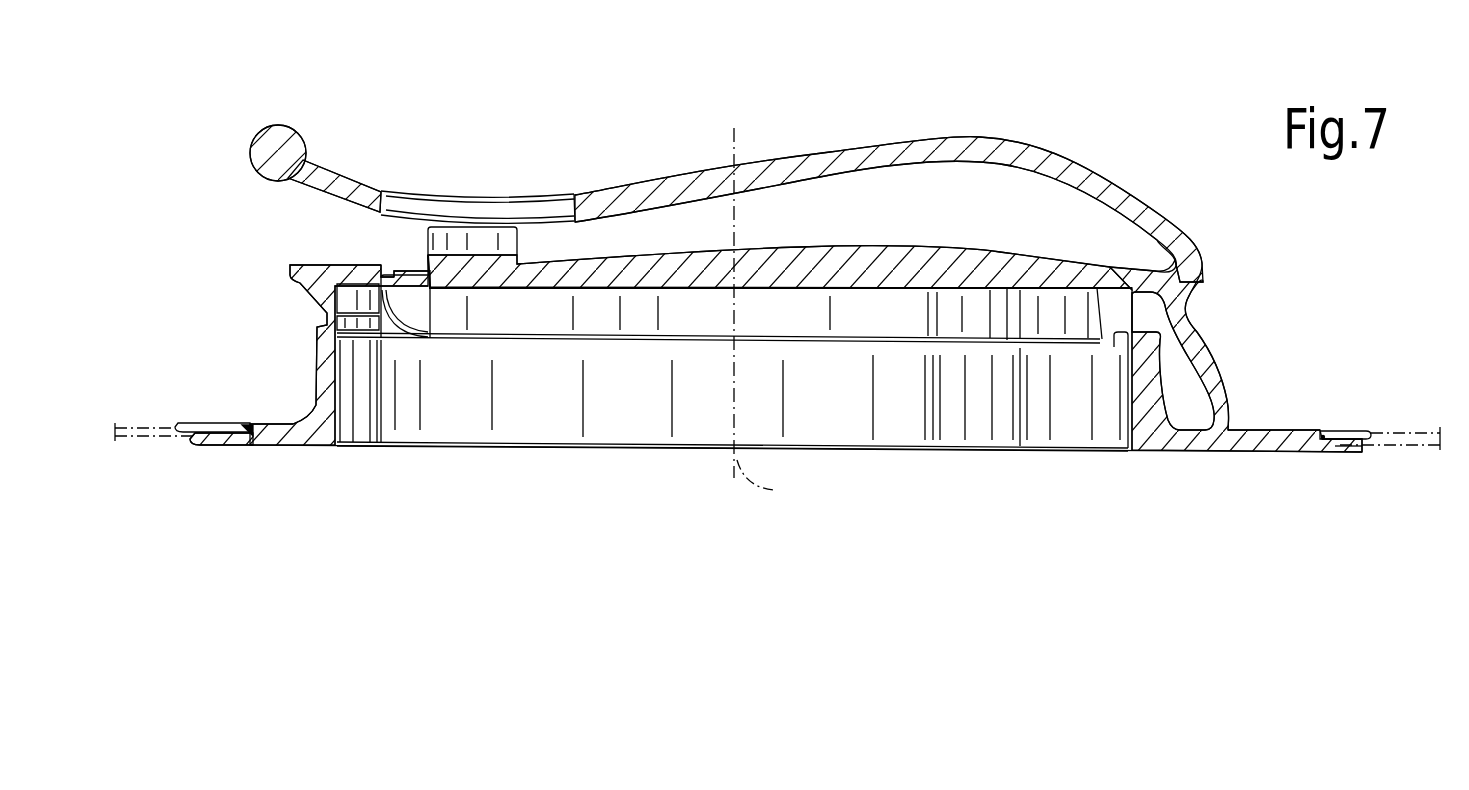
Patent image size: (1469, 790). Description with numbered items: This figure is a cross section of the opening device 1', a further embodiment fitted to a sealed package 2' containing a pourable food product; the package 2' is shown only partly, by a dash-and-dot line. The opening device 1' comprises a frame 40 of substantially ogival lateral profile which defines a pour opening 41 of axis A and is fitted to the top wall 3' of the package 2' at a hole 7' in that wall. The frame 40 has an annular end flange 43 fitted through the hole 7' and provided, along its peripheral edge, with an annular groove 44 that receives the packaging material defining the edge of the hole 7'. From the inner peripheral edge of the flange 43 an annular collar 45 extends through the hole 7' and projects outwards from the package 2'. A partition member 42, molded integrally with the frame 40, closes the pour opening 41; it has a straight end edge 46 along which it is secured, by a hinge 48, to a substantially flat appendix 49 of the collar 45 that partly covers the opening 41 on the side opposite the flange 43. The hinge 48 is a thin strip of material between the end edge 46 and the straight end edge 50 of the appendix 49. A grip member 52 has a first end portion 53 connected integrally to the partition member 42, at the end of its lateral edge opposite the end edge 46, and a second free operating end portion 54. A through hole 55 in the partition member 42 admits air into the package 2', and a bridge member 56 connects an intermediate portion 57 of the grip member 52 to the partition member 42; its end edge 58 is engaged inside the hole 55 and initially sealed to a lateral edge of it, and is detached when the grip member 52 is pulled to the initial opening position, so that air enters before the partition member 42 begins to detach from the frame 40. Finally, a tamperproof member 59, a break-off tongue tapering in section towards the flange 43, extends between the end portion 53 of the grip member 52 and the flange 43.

The opening device 1' is at (1067, 97).
The sealed package 2' is at (154, 393).
The top wall 3' is at (1390, 395).
The hole 7' is at (214, 459).
The frame 40 is at (1247, 453).
The pour opening 41 is at (1128, 397).
The partition member 42 is at (678, 273).
The annular end flange 43 is at (292, 436).
The annular groove 44 is at (1322, 437).
The annular collar 45 is at (320, 347).
The straight end edge 46 is at (403, 276).
The hinge 48 is at (393, 270).
The flat appendix 49 is at (367, 268).
The straight end edge of appendix 50 is at (368, 268).
The grip member 52 is at (836, 168).
The first end portion 53 is at (1162, 223).
The second free operating end portion 54 is at (278, 155).
The through hole 55 is at (435, 275).
The bridge member 56 is at (477, 243).
The intermediate portion 57 is at (578, 208).
The end edge of bridge member 58 is at (505, 285).
The tamperproof member 59 is at (1210, 367).
The axis A is at (778, 491).